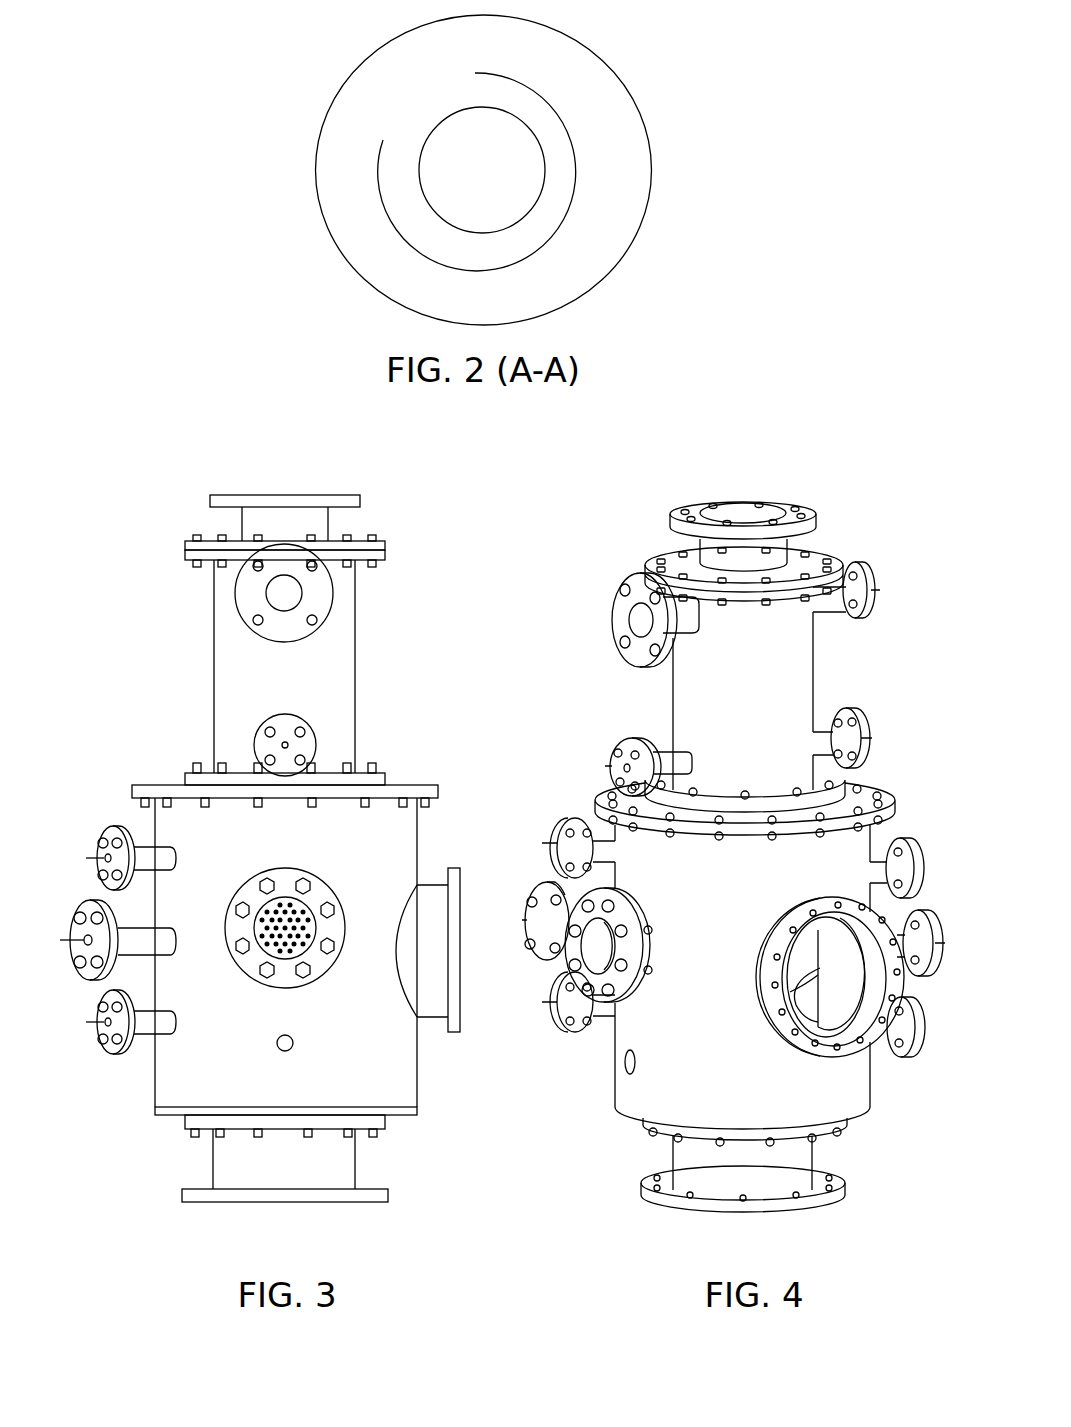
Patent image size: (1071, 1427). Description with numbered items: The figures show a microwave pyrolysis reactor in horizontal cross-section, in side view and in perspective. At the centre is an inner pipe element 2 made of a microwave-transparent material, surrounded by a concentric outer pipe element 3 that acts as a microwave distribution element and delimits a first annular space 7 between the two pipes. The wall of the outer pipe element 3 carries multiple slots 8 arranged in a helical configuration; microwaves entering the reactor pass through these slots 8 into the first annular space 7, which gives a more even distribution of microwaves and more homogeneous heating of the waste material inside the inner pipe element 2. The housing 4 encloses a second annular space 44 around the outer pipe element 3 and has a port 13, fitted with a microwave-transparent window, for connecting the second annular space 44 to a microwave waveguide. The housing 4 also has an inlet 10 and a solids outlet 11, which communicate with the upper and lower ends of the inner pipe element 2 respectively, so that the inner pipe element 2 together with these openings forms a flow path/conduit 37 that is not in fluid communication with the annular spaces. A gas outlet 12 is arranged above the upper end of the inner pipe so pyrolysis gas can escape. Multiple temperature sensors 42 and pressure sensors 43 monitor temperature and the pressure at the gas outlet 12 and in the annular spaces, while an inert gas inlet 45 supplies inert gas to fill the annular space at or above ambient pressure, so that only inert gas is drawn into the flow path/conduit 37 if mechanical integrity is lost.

In FIG. 2, the inner pipe element 2 is at (423, 193).
In FIG. 2, the outer pipe element 3 is at (586, 173).
In FIG. 4, the outer pipe element 3 is at (808, 942).
In FIG. 2, the housing 4 is at (622, 78).
In FIG. 2, the first annular space 7 is at (423, 220).
In FIG. 2, the slots 8 is at (405, 106).
In FIG. 4, the slots 8 is at (798, 995).
In FIG. 2, the flow path/conduit 37 is at (514, 182).
In FIG. 2, the second annular space 44 is at (592, 251).
In FIG. 3, the inlet 10 is at (300, 494).
In FIG. 4, the inlet 10 is at (747, 510).
In FIG. 3, the solids outlet 11 is at (285, 1202).
In FIG. 4, the solids outlet 11 is at (753, 1203).
In FIG. 3, the gas outlet 12 is at (277, 600).
In FIG. 4, the gas outlet 12 is at (640, 613).
In FIG. 3, the port 13 is at (453, 950).
In FIG. 4, the port 13 is at (835, 983).
In FIG. 3, the temperature sensors 42 is at (103, 857).
In FIG. 3, the pressure sensors 43 is at (280, 742).
In FIG. 3, the inert gas inlet 45 is at (277, 1048).
In FIG. 4, the inert gas inlet 45 is at (623, 1062).